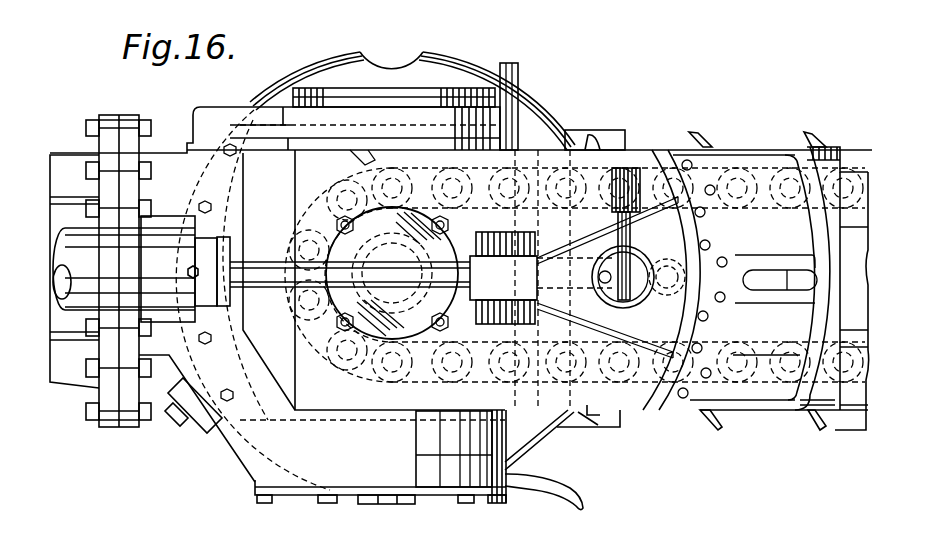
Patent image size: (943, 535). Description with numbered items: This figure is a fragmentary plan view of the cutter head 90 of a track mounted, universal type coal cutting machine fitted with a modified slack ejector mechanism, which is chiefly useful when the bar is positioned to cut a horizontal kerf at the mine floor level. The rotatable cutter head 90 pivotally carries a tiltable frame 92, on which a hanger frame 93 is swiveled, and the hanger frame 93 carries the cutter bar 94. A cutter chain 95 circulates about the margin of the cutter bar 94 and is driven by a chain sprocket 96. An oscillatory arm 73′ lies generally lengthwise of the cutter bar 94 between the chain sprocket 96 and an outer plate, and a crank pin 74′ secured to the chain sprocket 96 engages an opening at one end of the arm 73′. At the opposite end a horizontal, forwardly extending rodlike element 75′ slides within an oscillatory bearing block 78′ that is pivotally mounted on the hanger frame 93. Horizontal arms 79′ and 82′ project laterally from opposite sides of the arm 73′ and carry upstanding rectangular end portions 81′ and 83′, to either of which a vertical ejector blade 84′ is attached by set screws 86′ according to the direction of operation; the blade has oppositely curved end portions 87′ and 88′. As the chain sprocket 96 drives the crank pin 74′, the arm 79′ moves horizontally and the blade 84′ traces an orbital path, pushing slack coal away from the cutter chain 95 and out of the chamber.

The oscillatory arm 73′ is at (607, 277).
The crank pin 74′ is at (383, 266).
The rodlike element 75′ is at (740, 262).
The oscillatory bearing block 78′ is at (668, 258).
The horizontal arm 79′ is at (508, 468).
The upstanding rectangular end portion 81′ is at (510, 497).
The horizontal arm 82′ is at (518, 78).
The upstanding rectangular end portion 83′ is at (503, 62).
The ejector blade 84′ is at (505, 497).
The set screws 86′ is at (485, 497).
The curved end portion 87′ is at (582, 498).
The curved end portion 88′ is at (387, 497).
The cutter head 90 is at (122, 425).
The tiltable frame 92 is at (648, 410).
The hanger frame 93 is at (693, 410).
The cutter bar 94 is at (852, 320).
The cutter chain 95 is at (813, 424).
The chain sprocket 96 is at (400, 300).